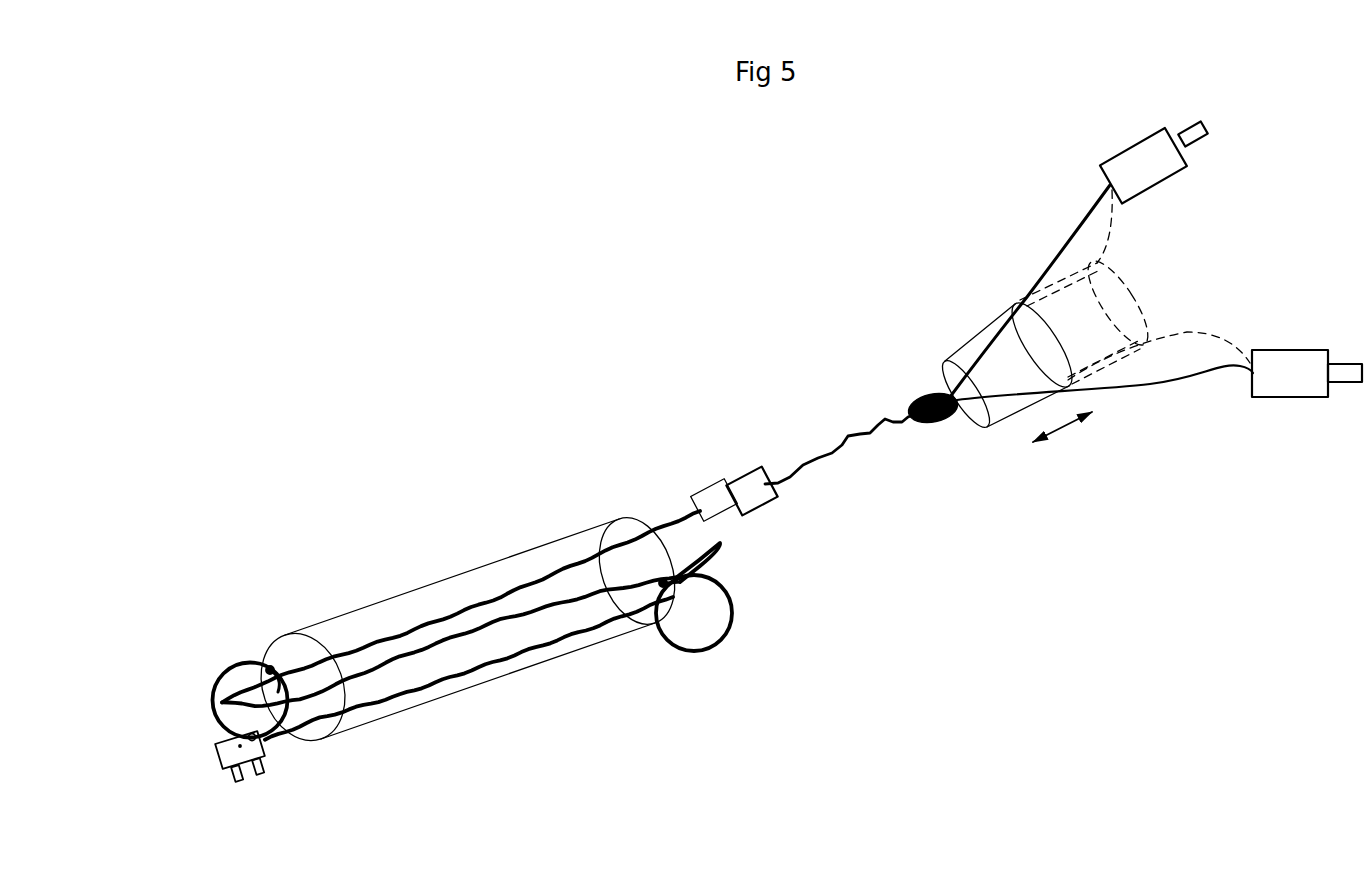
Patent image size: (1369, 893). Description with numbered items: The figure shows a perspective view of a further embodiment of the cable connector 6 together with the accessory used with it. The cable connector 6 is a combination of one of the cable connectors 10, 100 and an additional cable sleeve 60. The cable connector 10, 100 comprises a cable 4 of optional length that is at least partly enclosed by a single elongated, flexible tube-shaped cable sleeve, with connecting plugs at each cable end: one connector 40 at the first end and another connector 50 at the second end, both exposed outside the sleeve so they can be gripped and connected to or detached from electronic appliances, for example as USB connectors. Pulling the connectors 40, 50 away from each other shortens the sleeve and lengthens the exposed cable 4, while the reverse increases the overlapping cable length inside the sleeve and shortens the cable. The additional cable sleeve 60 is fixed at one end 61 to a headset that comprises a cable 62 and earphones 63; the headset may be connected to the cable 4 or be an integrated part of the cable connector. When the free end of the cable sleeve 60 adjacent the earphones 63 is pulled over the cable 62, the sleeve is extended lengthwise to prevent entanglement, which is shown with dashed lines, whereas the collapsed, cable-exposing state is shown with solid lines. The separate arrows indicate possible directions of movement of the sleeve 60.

The cable 4 is at (842, 440).
The cable connector 6 is at (955, 210).
The cable connector 10 is at (473, 550).
The cable connector 100 is at (453, 518).
The connector 40 is at (248, 753).
The connector 50 is at (764, 541).
The additional cable sleeve 60 is at (955, 377).
The end 61 is at (935, 432).
The cable 62 is at (1190, 332).
The earphones 63 is at (1140, 167).